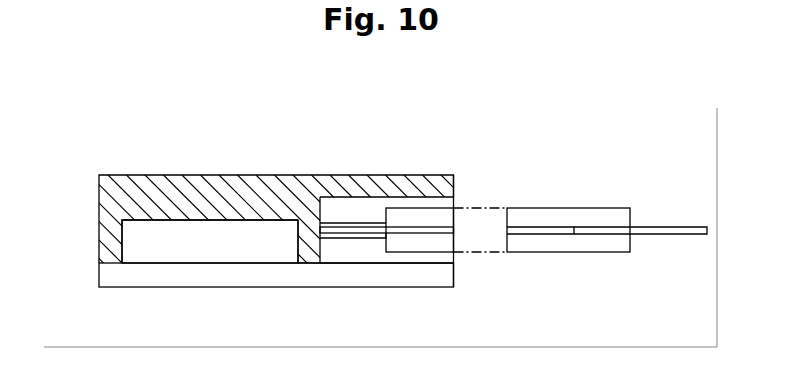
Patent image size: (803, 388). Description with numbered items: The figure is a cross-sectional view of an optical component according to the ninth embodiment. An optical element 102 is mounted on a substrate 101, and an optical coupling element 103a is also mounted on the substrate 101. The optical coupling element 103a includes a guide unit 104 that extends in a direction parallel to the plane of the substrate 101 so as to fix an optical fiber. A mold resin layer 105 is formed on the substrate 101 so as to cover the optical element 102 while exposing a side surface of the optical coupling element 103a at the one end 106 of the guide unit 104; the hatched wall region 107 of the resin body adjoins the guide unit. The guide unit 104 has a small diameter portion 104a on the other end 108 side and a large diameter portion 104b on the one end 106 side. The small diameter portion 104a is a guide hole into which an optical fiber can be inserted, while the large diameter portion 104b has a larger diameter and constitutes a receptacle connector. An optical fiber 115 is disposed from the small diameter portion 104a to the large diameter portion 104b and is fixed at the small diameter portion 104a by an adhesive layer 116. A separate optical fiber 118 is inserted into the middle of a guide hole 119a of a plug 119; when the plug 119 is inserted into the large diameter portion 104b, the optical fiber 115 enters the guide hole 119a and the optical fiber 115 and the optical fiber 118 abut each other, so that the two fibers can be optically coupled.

The substrate 101 is at (103, 277).
The optical element 102 is at (210, 228).
The optical coupling element 103a is at (382, 258).
The guide unit 104 is at (320, 152).
The small diameter portion 104a is at (342, 226).
The large diameter portion 104b is at (414, 210).
The mold resin layer 105 is at (106, 219).
The one end 106 is at (453, 262).
The partition wall 107 is at (306, 246).
The other end 108 is at (310, 250).
The optical fiber 115 is at (408, 231).
The adhesive layer 116 is at (362, 236).
The optical fiber 118 is at (667, 227).
The plug 119 is at (577, 208).
The guide hole 119a is at (539, 233).